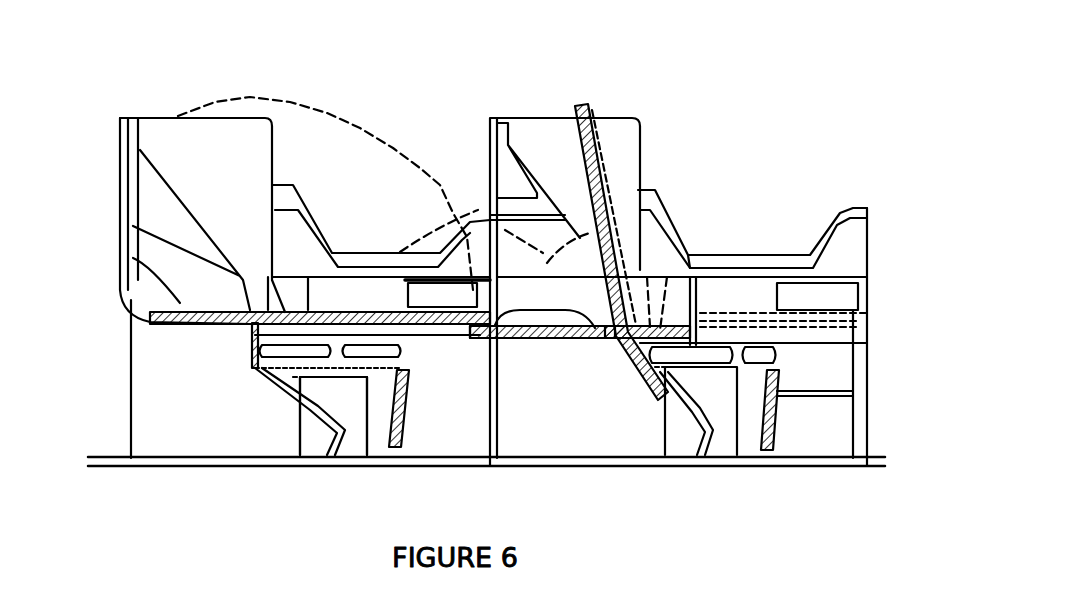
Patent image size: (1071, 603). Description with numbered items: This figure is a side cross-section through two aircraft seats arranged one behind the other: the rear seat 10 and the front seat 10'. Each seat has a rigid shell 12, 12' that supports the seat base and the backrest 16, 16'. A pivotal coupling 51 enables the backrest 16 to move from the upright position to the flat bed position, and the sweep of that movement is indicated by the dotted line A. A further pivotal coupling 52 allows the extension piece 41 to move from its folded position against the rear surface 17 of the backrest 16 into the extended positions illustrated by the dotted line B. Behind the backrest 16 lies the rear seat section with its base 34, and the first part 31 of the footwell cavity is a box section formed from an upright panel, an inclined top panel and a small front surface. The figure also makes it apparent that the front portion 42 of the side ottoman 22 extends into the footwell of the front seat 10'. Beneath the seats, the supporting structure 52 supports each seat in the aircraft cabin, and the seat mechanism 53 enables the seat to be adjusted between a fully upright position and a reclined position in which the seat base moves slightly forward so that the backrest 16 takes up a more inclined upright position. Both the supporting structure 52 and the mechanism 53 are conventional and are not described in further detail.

The seat 10 is at (314, 292).
The front seat 10' is at (682, 266).
The shell 12 is at (271, 183).
The shell of front seat 12' is at (722, 151).
The backrest 16 is at (506, 415).
The backrest of front seat 16' is at (667, 252).
The rear surface 17 is at (468, 337).
The side ottoman 22 is at (525, 305).
The first part of footwell cavity 31 is at (160, 205).
The base 34 is at (125, 257).
The extension piece 41 is at (510, 343).
The front portion 42 is at (693, 257).
The pivotal coupling 51 is at (240, 325).
The supporting structure 52 is at (306, 422).
The seat mechanism 53 is at (262, 373).
The dotted line A is at (325, 112).
The dotted line B is at (618, 220).